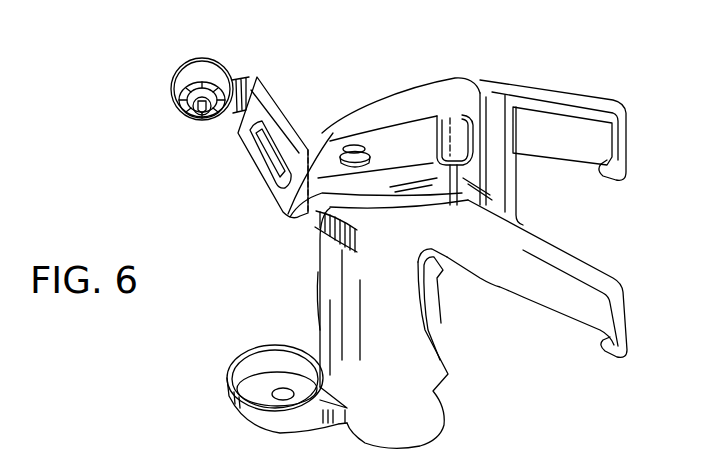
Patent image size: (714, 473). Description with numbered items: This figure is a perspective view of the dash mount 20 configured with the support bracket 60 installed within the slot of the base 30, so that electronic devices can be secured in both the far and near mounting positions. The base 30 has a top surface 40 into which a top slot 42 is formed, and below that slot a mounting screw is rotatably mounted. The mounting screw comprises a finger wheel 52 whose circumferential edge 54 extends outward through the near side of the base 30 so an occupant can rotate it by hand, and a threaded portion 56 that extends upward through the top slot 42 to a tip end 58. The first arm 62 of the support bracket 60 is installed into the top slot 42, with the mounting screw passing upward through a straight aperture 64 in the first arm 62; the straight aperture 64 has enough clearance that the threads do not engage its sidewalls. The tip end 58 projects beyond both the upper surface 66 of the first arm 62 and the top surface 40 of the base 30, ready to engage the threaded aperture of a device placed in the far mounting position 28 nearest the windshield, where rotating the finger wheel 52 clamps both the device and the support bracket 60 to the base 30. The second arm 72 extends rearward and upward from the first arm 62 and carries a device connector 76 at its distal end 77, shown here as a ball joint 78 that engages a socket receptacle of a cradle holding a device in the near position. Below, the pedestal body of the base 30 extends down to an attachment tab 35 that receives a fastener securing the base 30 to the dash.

The dash mount 20 is at (560, 48).
The far mounting position 28 is at (377, 230).
The base 30 is at (443, 348).
The attachment tab 35 is at (226, 400).
The top surface 40 is at (378, 113).
The top slot 42 is at (467, 83).
The finger wheel 52 is at (317, 237).
The circumferential edge 54 is at (318, 272).
The threaded portion 56 is at (380, 153).
The tip end 58 is at (352, 145).
The support bracket 60 is at (257, 172).
The first arm 62 is at (438, 127).
The straight aperture 64 is at (307, 212).
The upper surface 66 is at (416, 133).
The second arm 72 is at (280, 84).
The device connector 76 is at (186, 133).
The distal end 77 is at (185, 45).
The ball joint 78 is at (173, 84).